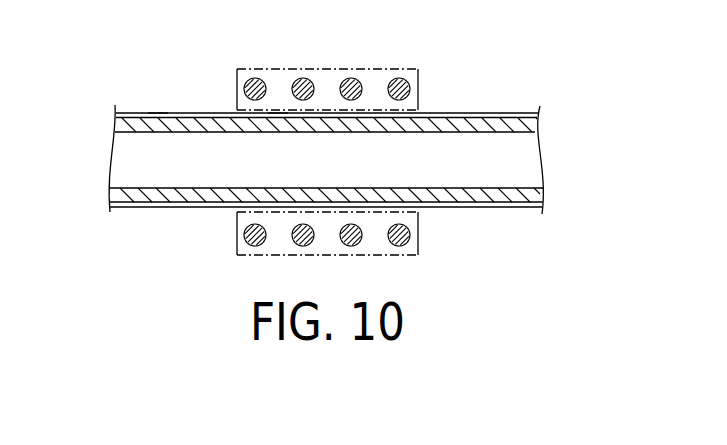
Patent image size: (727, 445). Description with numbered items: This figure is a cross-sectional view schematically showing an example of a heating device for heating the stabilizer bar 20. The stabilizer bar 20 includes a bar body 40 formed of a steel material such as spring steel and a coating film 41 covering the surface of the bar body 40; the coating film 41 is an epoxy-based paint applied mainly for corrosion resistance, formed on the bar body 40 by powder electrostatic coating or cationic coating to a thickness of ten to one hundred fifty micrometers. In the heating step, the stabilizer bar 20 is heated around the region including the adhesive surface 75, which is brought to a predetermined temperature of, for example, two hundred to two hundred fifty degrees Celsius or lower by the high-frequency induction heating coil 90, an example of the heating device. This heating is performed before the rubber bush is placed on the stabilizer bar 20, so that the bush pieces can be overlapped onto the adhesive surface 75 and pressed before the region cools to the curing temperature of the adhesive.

The stabilizer bar 20 is at (517, 97).
The bar body 40 is at (133, 125).
The coating film 41 is at (210, 112).
The adhesive surface 75 is at (326, 112).
The high-frequency induction heating coil 90 is at (402, 80).